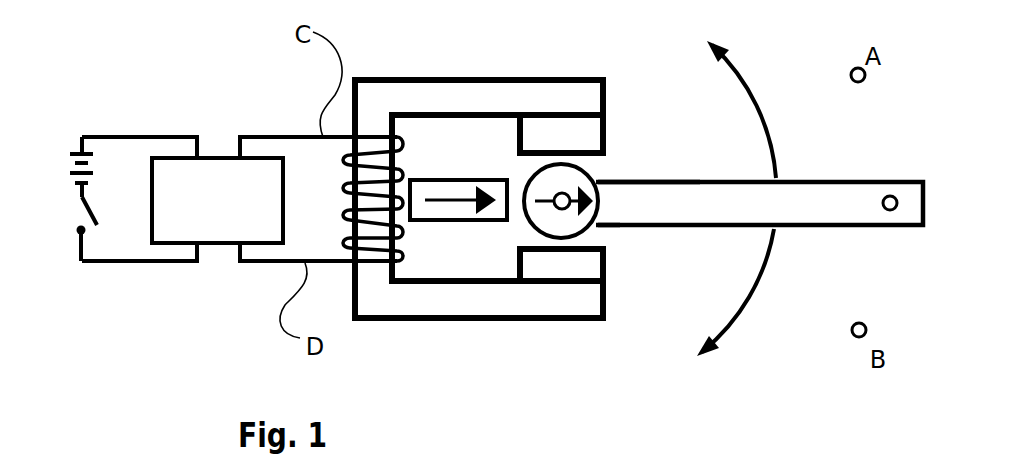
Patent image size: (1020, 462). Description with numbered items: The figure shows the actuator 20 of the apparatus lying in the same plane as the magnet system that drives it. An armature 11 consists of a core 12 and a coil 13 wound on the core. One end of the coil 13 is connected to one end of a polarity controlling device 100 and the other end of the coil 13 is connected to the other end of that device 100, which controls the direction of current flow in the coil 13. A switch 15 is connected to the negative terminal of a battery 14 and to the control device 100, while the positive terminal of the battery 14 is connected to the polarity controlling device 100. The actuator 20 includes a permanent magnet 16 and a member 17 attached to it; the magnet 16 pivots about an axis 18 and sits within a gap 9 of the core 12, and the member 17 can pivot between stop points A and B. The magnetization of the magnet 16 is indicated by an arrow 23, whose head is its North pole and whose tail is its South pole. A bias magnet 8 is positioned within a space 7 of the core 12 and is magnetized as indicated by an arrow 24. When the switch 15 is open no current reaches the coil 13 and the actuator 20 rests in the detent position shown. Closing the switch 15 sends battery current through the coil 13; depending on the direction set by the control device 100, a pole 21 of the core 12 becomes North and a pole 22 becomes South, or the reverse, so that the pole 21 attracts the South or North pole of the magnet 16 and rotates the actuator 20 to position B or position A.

The space 7 is at (420, 253).
The bias magnet 8 is at (458, 222).
The gap 9 is at (590, 240).
The armature 11 is at (473, 78).
The core 12 is at (393, 100).
The coil 13 is at (300, 136).
The battery 14 is at (77, 154).
The switch 15 is at (85, 212).
The permanent magnet 16 is at (543, 183).
The member 17 is at (853, 203).
The axis 18 is at (570, 188).
The actuator 20 is at (673, 178).
The pole 21 is at (583, 130).
The pole 22 is at (565, 281).
The arrow 23 is at (554, 207).
The arrow 24 is at (433, 197).
The polarity controlling device 100 is at (227, 160).